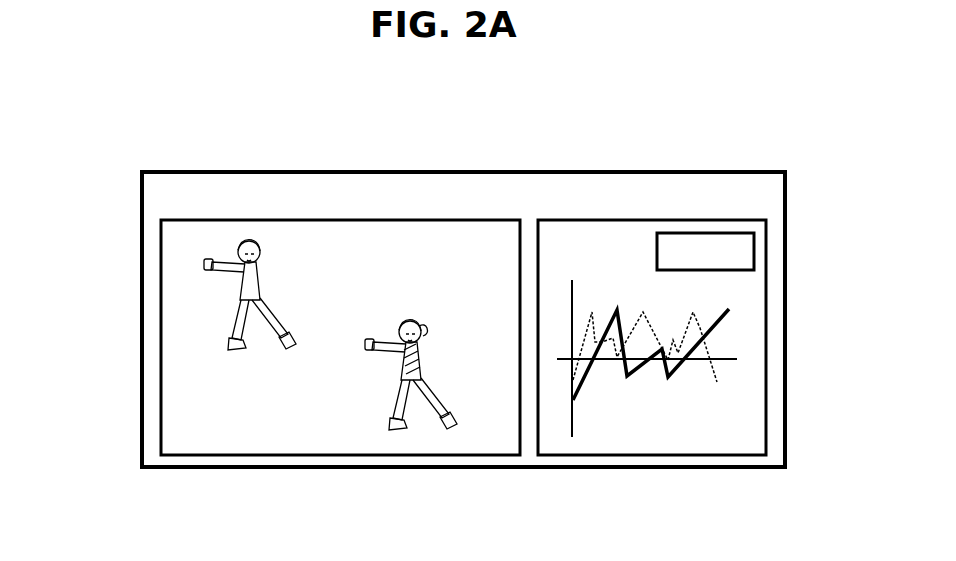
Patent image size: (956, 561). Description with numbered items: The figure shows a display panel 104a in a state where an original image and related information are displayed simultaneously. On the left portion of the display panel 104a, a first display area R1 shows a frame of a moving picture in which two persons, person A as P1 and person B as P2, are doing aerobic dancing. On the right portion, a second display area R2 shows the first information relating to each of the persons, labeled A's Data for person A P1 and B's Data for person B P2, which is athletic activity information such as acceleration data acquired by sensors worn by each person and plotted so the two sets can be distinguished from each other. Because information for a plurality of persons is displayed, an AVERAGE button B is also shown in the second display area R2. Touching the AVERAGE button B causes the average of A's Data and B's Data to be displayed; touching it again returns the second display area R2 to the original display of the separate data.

The display panel 104a is at (142, 183).
The first display area R1 is at (162, 247).
The second display area R2 is at (693, 312).
The person A P1 is at (242, 282).
The person B P2 is at (396, 432).
The AVERAGE button B is at (752, 255).